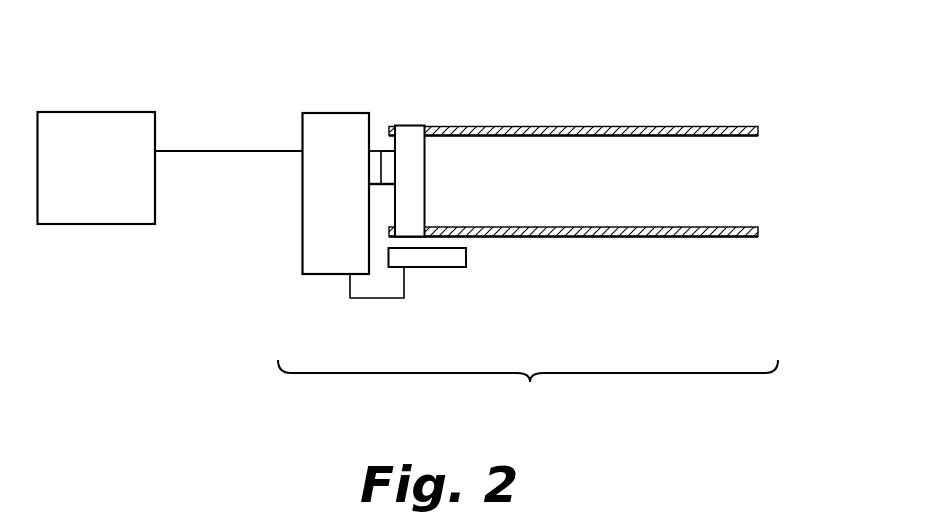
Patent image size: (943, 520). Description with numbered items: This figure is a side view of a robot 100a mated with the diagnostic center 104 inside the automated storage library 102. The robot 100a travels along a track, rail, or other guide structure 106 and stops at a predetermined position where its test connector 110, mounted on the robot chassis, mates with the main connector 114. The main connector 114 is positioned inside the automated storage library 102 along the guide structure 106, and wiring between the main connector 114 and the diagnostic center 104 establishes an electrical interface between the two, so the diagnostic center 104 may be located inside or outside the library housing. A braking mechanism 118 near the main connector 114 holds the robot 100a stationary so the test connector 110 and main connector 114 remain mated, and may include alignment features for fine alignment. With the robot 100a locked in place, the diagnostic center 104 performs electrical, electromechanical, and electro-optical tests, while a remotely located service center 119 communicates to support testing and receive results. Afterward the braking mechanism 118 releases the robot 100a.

The service center 119 is at (110, 224).
The diagnostic center 104 is at (329, 274).
The guide structure 106 is at (568, 137).
The robot 100a is at (410, 124).
The main connector 114 is at (374, 150).
The test connector 110 is at (386, 150).
The braking mechanism 118 is at (439, 267).
The automated storage library 102 is at (528, 385).